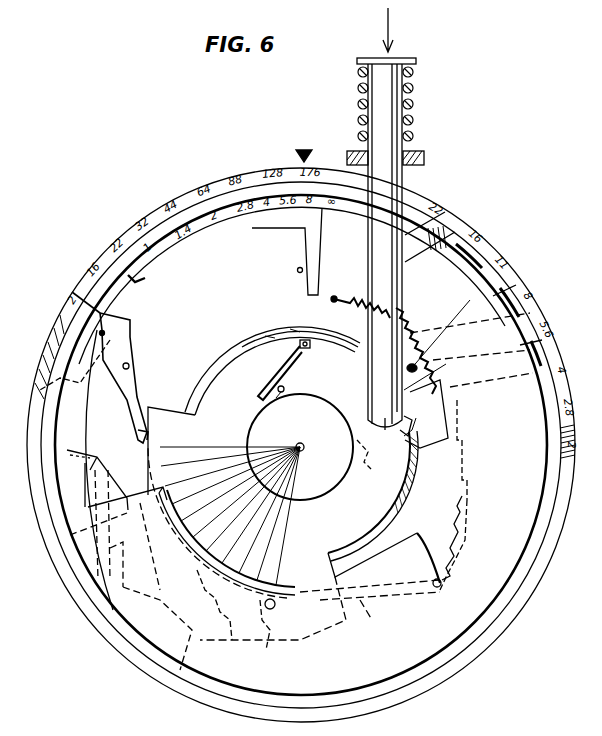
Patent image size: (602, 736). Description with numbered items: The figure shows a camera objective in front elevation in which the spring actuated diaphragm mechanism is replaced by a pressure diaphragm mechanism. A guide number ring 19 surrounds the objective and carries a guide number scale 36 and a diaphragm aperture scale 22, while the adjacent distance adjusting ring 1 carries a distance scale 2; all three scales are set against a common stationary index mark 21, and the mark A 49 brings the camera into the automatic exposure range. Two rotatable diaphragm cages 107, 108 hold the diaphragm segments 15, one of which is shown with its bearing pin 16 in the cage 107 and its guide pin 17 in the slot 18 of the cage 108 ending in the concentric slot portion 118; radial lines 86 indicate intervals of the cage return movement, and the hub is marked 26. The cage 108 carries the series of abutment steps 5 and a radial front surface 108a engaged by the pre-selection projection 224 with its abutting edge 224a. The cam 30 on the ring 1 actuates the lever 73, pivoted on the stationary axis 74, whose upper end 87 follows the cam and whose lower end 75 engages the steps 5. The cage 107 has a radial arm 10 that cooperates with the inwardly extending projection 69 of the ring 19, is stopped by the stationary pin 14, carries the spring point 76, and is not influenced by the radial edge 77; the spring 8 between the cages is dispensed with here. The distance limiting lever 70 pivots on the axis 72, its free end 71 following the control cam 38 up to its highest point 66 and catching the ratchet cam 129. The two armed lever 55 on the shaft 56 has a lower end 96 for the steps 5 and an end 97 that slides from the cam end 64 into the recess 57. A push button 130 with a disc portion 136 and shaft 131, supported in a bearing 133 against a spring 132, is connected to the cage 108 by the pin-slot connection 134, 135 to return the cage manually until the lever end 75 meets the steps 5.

The distance adjusting ring 1 is at (412, 226).
The distance scale 2 is at (200, 228).
The series of abutment steps 5 is at (230, 624).
The spring 8 is at (362, 300).
The radial arm 10 is at (547, 342).
The stationary pin 14 is at (424, 360).
The diaphragm segment 15 is at (372, 447).
The bearing pin 16 is at (282, 393).
The guide pin 17 is at (307, 340).
The slot 18 is at (268, 386).
The guide number ring 19 is at (323, 172).
The stationary index mark 21 is at (300, 150).
The diaphragm aperture scale 22 is at (474, 230).
The hub disc 26 is at (337, 482).
The cam 30 is at (100, 333).
The guide number scale 36 is at (228, 182).
The control cam 38 is at (470, 520).
The mark A 49 is at (355, 183).
The two armed lever 55 is at (110, 548).
The shaft 56 is at (128, 496).
The recess 57 is at (60, 378).
The end of cam 64 is at (86, 458).
The highest point of cam 66 is at (378, 598).
The inwardly extending projection 69 is at (514, 285).
The distance limiting lever 70 is at (360, 610).
The free end of lever 71 is at (439, 588).
The stationary axis 72 is at (266, 640).
The lever 73 is at (131, 340).
The stationary axis 74 is at (130, 366).
The lower end of lever 75 is at (140, 432).
The point on diaphragm cage 76 is at (432, 396).
The radial edge 77 is at (500, 390).
The radial lines 86 is at (260, 556).
The upper end of lever 87 is at (76, 297).
The lower end of lever 96 is at (150, 592).
The end of lever 97 is at (96, 456).
The second rotatable diaphragm cage 107 is at (206, 372).
The rotatable diaphragm cage 108 is at (236, 352).
The radial front surface 108a is at (156, 408).
The concentric slot portion 118 is at (354, 352).
The ratchet cam 129 is at (462, 533).
The push button 130 is at (421, 48).
The shaft 131 is at (370, 247).
The spring 132 is at (414, 86).
The bearing 133 is at (418, 150).
The pin of pin-slot connection 134 is at (386, 426).
The slot of pin-slot connection 135 is at (408, 425).
The disc portion 136 is at (364, 60).
The pre-selection projection 224 is at (306, 247).
The abutting edge 224a is at (298, 270).